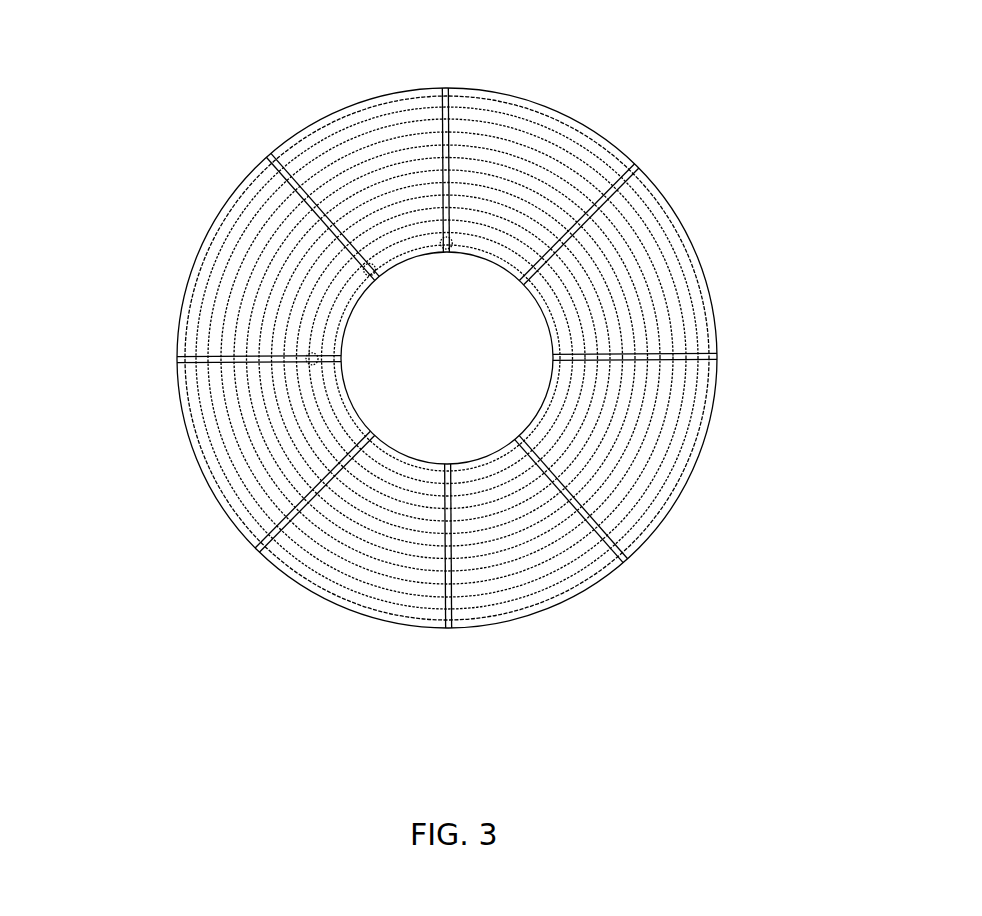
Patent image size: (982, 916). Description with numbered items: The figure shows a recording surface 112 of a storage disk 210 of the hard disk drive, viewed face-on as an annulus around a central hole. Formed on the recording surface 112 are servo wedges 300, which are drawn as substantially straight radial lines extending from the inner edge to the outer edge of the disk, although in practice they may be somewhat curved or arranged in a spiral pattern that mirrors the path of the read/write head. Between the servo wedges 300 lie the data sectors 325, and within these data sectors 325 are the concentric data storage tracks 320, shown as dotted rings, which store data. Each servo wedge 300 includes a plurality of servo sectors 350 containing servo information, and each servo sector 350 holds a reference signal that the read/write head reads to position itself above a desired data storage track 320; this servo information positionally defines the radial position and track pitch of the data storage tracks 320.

The servo wedge 300 is at (446, 354).
The storage disk 210 is at (257, 162).
The recording surface 112 is at (285, 301).
The data storage track 320 is at (662, 207).
The data sector 325 is at (170, 368).
The servo sector 350 is at (450, 251).